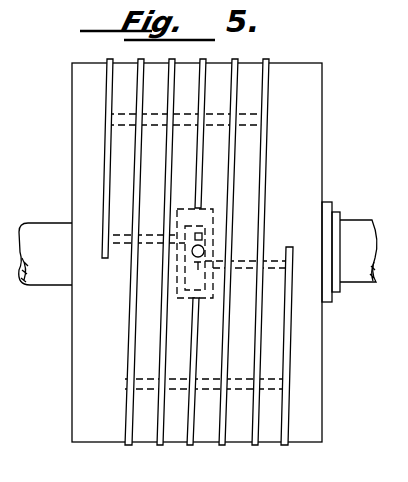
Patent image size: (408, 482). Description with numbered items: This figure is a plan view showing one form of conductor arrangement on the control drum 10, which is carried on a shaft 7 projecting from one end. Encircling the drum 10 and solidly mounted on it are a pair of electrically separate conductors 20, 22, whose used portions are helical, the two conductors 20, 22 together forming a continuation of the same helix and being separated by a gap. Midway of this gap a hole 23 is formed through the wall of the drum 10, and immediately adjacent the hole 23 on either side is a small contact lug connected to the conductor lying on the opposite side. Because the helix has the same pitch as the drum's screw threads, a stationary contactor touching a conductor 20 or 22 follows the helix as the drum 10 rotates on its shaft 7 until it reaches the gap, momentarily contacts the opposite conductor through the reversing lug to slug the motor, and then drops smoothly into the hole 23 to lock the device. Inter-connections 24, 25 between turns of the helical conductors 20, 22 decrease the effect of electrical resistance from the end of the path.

The drum 10 is at (322, 399).
The conductor 20 is at (196, 234).
The conductor 22 is at (253, 458).
The hole 23 is at (204, 250).
The inter-connection 24 is at (126, 384).
The inter-connection 25 is at (288, 386).
The shaft 7 is at (366, 284).